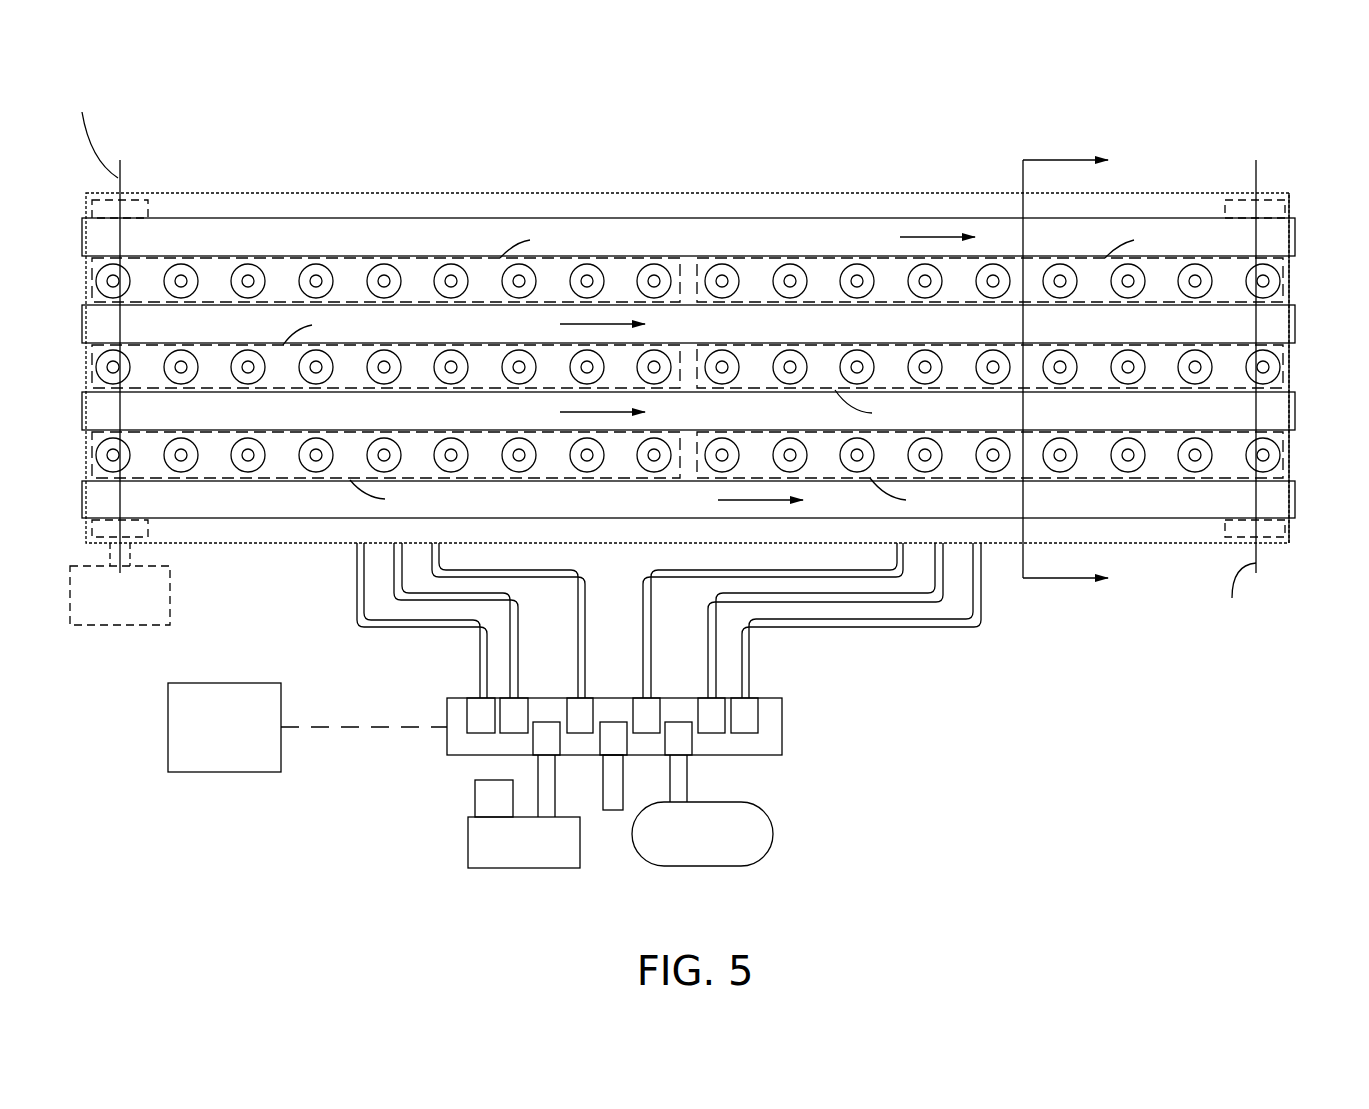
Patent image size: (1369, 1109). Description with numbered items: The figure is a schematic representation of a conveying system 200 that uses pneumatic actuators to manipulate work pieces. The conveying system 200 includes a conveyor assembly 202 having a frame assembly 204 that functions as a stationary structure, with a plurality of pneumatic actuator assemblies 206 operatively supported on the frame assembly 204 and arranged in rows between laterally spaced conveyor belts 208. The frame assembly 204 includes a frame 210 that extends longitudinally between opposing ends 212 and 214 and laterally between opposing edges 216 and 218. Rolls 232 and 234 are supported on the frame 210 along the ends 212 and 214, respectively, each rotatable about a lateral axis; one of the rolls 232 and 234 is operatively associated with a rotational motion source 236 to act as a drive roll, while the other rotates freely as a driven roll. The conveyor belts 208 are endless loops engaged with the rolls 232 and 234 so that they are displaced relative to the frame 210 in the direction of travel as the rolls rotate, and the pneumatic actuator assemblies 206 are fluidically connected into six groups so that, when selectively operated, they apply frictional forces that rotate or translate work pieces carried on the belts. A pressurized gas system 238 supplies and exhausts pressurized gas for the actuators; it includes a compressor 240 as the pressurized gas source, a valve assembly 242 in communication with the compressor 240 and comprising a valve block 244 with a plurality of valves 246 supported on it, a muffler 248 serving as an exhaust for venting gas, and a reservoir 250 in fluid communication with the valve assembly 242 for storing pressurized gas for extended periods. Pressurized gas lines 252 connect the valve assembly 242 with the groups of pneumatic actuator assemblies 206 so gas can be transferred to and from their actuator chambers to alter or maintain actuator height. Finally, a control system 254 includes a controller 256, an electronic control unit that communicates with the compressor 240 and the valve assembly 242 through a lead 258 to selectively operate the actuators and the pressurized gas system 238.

The conveying system 200 is at (652, 126).
The conveyor assembly 202 is at (823, 183).
The frame assembly 204 is at (691, 197).
The pneumatic actuator assemblies 206 is at (442, 356).
The conveyor belts 208 is at (216, 313).
The frame 210 is at (560, 195).
The end 212 is at (138, 153).
The end 214 is at (1270, 153).
The edge 216 is at (1311, 194).
The edge 218 is at (1309, 546).
The roll 232 is at (150, 208).
The roll 234 is at (1243, 207).
The rotational motion source 236 is at (110, 626).
The pressurized gas system 238 is at (436, 792).
The compressor 240 is at (523, 848).
The valve assembly 242 is at (786, 718).
The valve block 244 is at (785, 740).
The valves 246 is at (480, 720).
The muffler 248 is at (613, 800).
The reservoir 250 is at (705, 838).
The pressurized gas lines 252 is at (397, 580).
The control system 254 is at (231, 797).
The controller 256 is at (204, 741).
The lead 258 is at (335, 730).